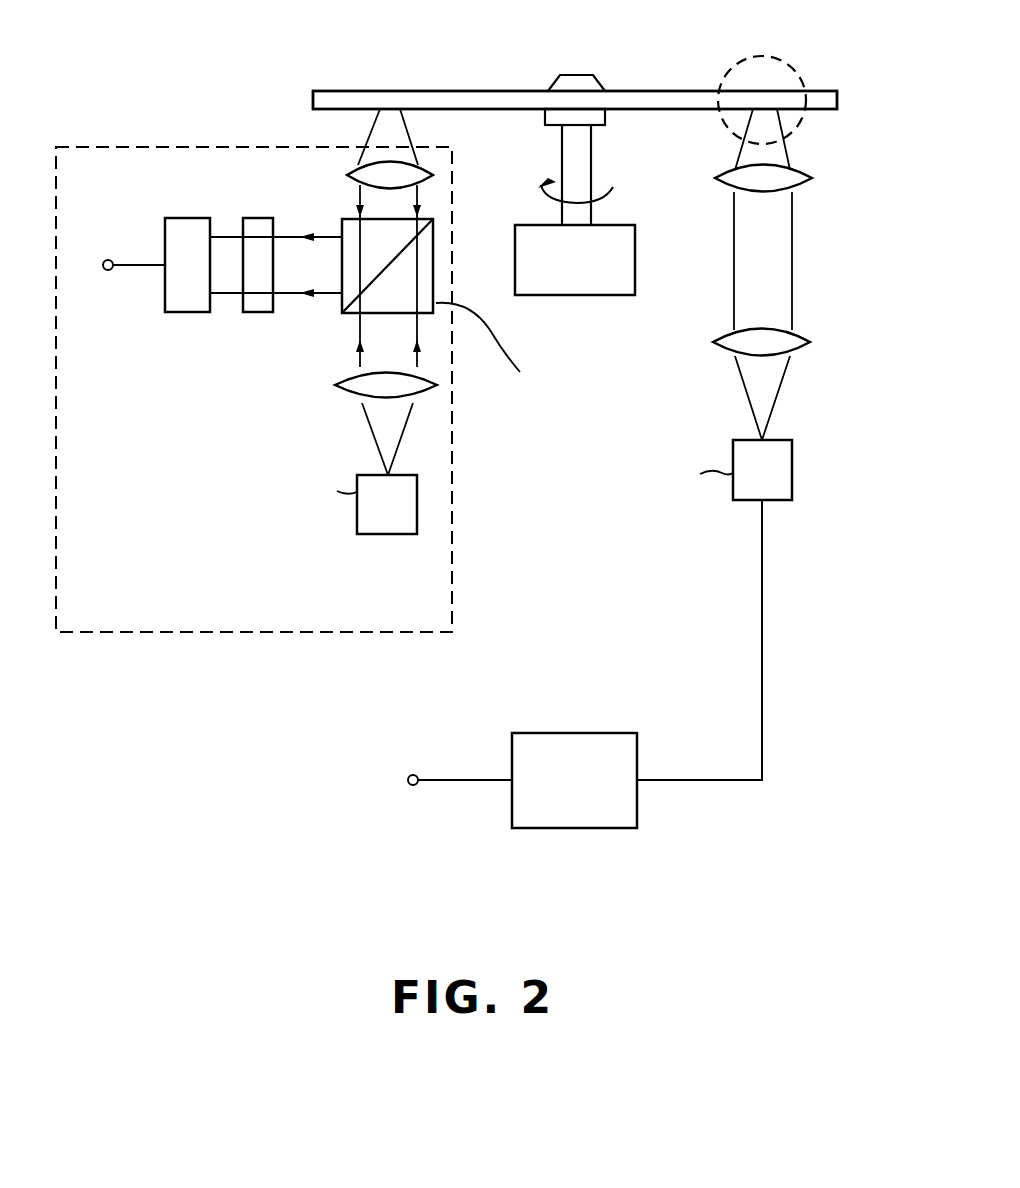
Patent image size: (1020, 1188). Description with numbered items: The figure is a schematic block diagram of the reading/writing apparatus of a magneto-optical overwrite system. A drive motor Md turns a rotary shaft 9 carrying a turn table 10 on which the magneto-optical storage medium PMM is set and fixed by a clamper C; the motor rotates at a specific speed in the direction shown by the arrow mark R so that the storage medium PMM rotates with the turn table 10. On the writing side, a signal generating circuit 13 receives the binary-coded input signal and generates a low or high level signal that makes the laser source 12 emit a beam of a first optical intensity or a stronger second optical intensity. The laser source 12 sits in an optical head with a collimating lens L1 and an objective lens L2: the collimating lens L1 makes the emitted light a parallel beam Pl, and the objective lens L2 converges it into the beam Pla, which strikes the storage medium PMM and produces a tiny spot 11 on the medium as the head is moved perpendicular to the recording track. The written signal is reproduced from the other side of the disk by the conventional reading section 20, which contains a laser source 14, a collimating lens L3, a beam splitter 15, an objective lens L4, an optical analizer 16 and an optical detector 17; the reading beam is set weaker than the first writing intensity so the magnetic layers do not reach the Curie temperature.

The rotary shaft 9 is at (568, 143).
The turn table 10 is at (545, 120).
The tiny spot 11 is at (762, 100).
The laser source 12 is at (792, 472).
The signal generating circuit 13 is at (575, 829).
The laser source 14 is at (388, 534).
The beam splitter 15 is at (434, 287).
The optical analizer 16 is at (257, 313).
The optical detector 17 is at (190, 313).
The reading section 20 is at (233, 636).
The magneto-optical storage medium PMM is at (575, 85).
The clamper C is at (573, 75).
The arrow mark R is at (613, 187).
The drive motor Md is at (572, 296).
The collimating lens L1 is at (793, 344).
The objective lens L2 is at (775, 183).
The collimating lens L3 is at (420, 393).
The objective lens L4 is at (430, 183).
The parallel beam Pl is at (770, 274).
The converged beam Pla is at (765, 130).